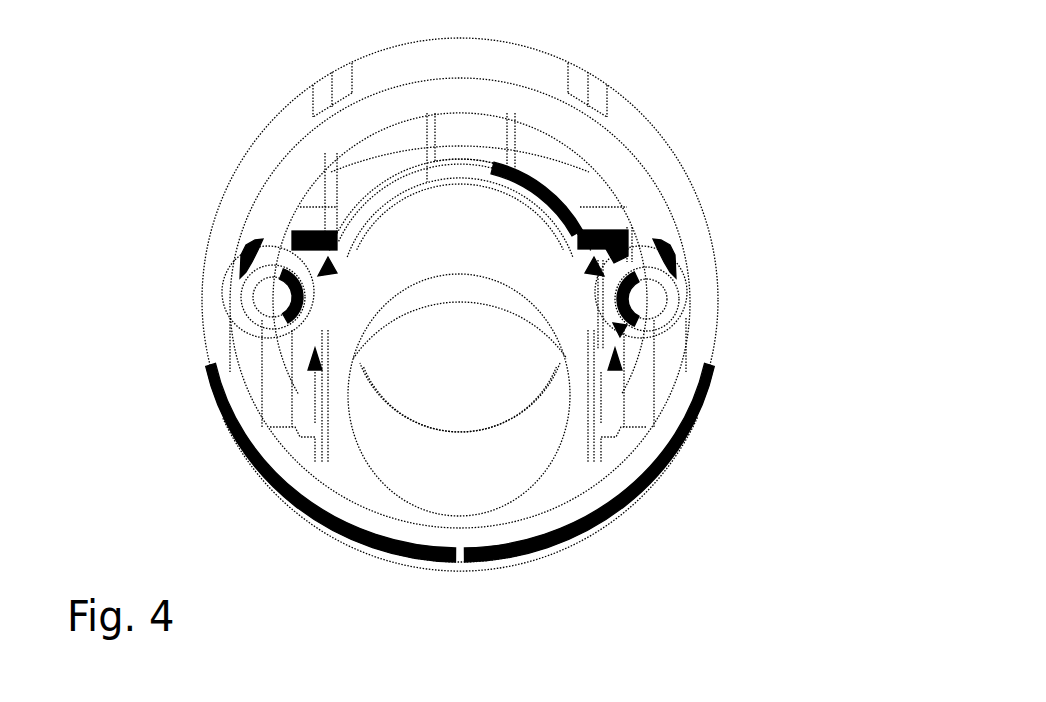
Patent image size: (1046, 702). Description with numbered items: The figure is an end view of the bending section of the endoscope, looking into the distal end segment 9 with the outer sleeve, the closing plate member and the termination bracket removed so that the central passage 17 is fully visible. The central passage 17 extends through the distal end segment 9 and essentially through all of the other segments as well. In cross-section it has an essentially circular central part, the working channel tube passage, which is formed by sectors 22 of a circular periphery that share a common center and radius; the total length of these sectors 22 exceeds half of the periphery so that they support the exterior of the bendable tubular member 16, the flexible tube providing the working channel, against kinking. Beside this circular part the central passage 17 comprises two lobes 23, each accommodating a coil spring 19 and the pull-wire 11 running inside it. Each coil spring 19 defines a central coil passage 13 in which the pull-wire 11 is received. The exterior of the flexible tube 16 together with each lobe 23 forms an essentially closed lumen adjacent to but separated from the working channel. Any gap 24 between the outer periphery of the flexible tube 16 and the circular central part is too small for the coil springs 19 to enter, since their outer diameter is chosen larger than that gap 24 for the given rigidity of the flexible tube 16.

The distal end segment 9 is at (663, 135).
The pull-wire 11 is at (277, 310).
The central coil passage 13 is at (290, 272).
The bendable tubular member 16 is at (553, 497).
The central passage 17 is at (471, 333).
The coil spring 19 is at (247, 285).
The sector of circular periphery 22 is at (555, 190).
The lobe 23 is at (327, 268).
The gap 24 is at (322, 378).